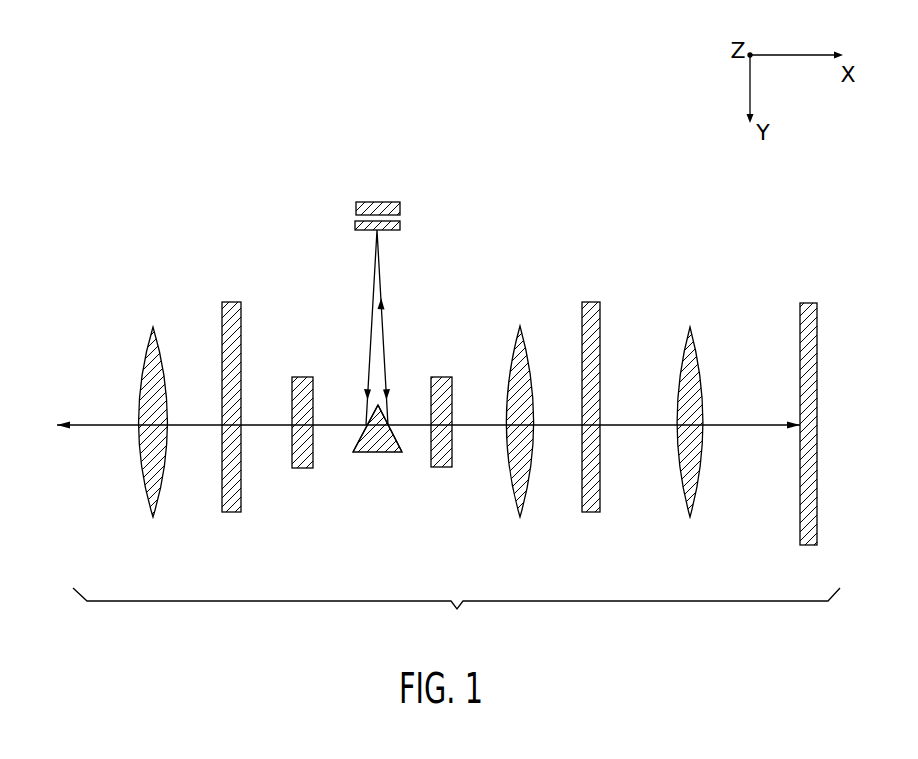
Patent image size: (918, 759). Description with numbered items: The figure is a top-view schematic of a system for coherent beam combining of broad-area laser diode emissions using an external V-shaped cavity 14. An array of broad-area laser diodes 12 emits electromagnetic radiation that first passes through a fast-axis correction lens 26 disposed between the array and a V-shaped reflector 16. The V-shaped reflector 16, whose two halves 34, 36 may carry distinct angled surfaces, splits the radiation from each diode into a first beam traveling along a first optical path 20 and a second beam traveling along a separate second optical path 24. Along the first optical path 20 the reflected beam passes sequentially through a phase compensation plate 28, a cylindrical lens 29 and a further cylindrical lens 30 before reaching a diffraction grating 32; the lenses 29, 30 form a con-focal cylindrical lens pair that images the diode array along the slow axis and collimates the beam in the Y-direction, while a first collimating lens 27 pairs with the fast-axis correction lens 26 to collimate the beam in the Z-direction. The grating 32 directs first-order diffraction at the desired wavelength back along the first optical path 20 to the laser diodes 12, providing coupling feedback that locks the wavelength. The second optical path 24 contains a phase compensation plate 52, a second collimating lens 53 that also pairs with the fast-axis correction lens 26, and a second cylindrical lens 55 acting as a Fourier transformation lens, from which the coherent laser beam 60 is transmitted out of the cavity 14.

The array of broad-area laser diodes 12 is at (356, 208).
The fast-axis correction lens 26 is at (400, 226).
The V-shaped reflector 16 is at (377, 452).
The half of the V-shaped reflector 36 is at (359, 440).
The half of the V-shaped reflector 34 is at (396, 440).
The laser beam 60 is at (85, 425).
The second cylindrical lens 55 is at (153, 327).
The second collimating lens 53 is at (234, 302).
The phase compensation plate 52 is at (303, 377).
The second optical path 24 is at (268, 430).
The phase compensation plate 28 is at (441, 377).
The first optical path 20 is at (485, 432).
The cylindrical lens 29 is at (520, 326).
The first collimating lens 27 is at (590, 302).
The cylindrical lens 30 is at (690, 327).
The grating 32 is at (808, 303).
The V-shaped cavity 14 is at (457, 609).